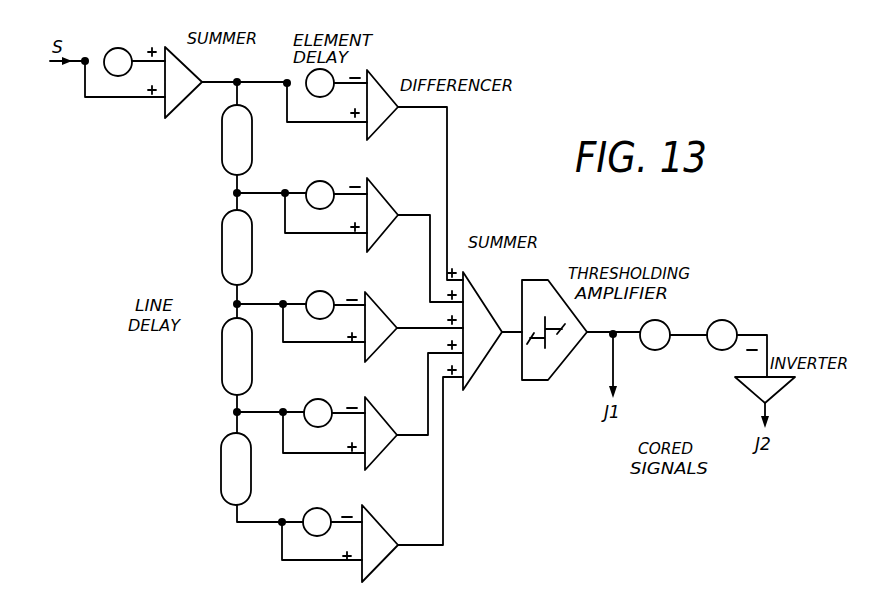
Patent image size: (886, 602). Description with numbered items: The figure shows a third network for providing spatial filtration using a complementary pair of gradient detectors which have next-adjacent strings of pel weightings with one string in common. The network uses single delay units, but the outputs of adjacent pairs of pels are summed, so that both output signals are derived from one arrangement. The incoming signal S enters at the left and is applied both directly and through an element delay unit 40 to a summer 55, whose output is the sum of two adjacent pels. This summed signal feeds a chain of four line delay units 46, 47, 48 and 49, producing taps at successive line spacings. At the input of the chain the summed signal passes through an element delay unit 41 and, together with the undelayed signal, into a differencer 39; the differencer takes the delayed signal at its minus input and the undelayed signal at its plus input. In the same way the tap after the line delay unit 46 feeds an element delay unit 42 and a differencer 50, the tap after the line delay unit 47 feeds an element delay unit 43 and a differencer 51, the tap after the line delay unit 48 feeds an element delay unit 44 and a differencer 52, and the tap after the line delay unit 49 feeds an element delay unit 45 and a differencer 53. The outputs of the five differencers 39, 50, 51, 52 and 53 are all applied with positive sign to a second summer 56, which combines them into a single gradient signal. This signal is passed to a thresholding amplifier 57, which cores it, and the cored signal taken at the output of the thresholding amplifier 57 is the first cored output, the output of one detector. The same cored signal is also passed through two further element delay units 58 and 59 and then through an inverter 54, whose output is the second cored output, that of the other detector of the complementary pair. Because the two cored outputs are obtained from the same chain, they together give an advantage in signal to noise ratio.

The differencer 39 is at (386, 114).
The element delay unit 40 is at (117, 48).
The element delay unit 41 is at (331, 92).
The element delay unit 42 is at (330, 184).
The element delay unit 43 is at (330, 293).
The element delay unit 44 is at (338, 390).
The element delay unit 45 is at (328, 509).
The line delay unit 46 is at (222, 145).
The line delay unit 47 is at (222, 246).
The line delay unit 48 is at (222, 360).
The line delay unit 49 is at (221, 470).
The differencer 50 is at (386, 196).
The differencer 51 is at (384, 312).
The differencer 52 is at (384, 422).
The differencer 53 is at (388, 526).
The inverter 54 is at (748, 392).
The summer 55 is at (186, 58).
The summer 56 is at (489, 300).
The thresholding amplifier 57 is at (582, 322).
The element delay unit 58 is at (663, 323).
The element delay unit 59 is at (730, 323).